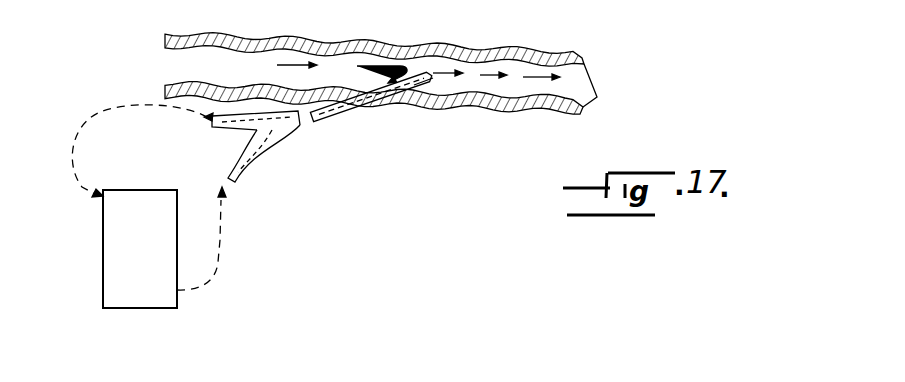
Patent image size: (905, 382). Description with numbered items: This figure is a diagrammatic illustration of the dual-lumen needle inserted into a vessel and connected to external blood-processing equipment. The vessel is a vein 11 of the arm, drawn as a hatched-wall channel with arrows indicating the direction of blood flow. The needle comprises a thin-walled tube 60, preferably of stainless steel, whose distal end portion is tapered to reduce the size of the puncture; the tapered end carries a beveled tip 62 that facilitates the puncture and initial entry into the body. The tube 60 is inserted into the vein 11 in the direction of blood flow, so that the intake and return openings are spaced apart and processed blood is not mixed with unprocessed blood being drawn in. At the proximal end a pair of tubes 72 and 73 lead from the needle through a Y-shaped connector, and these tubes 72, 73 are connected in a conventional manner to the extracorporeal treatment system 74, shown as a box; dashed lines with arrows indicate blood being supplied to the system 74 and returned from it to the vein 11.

The vein 11 is at (459, 38).
The thin-walled tube 60 is at (322, 118).
The beveled tip 62 is at (421, 81).
The tube 72 is at (232, 130).
The tube 73 is at (243, 162).
The extracorporeal treatment system 74 is at (146, 242).